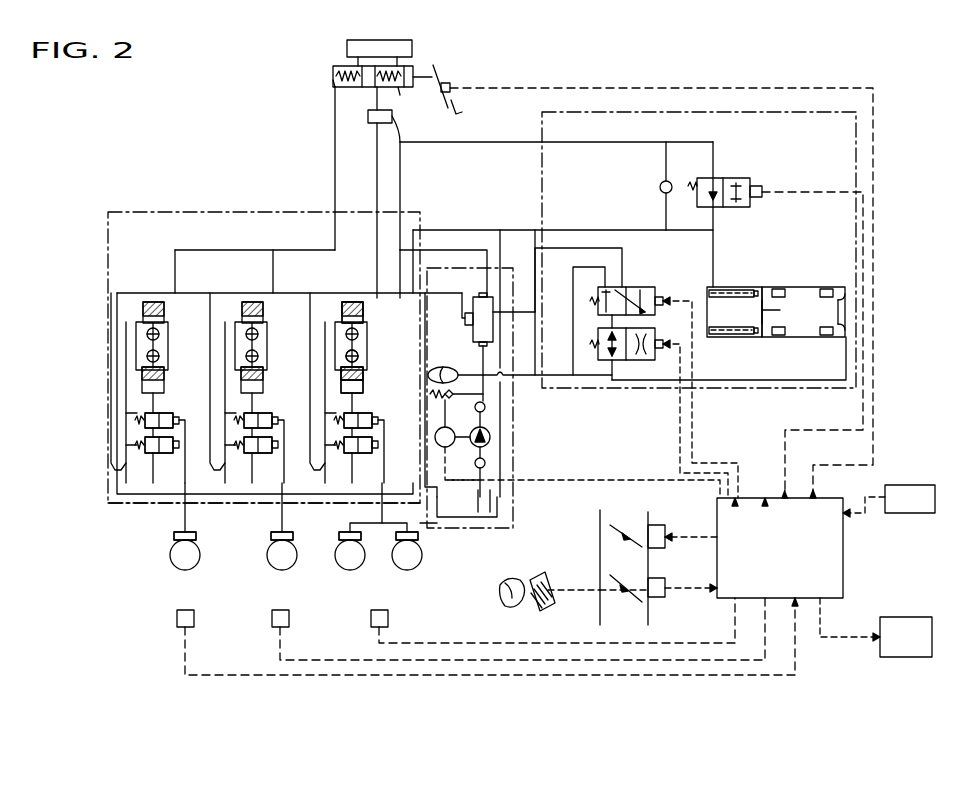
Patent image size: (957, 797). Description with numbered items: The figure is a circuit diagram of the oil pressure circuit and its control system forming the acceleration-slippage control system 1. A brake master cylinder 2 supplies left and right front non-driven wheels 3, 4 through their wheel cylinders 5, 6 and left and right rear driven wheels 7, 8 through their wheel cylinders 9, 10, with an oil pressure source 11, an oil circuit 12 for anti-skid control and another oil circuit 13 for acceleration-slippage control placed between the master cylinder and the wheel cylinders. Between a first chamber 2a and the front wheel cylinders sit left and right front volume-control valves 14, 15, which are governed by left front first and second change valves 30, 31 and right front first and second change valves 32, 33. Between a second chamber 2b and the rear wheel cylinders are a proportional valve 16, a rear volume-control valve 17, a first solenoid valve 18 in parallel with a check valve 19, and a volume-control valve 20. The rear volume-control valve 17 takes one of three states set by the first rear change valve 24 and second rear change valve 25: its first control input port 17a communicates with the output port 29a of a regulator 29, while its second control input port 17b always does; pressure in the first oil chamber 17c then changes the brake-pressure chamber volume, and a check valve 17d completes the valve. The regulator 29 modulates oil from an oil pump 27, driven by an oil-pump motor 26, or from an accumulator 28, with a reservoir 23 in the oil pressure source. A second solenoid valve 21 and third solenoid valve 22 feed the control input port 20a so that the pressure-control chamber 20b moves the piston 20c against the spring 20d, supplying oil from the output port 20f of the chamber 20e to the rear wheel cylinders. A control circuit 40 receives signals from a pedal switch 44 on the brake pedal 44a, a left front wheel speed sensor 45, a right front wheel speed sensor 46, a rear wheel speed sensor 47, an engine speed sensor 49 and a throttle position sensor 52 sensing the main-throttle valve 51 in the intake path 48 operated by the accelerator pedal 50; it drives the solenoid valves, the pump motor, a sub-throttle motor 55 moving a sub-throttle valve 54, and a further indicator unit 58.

The acceleration-slippage control system 1 is at (216, 170).
The brake master cylinder 2 is at (412, 72).
The first chamber 2a is at (333, 80).
The second chamber 2b is at (398, 90).
The left front non-driven wheel 3 is at (170, 563).
The right front non-driven wheel 4 is at (267, 563).
The left front wheel cylinder 5 is at (174, 534).
The right front wheel cylinder 6 is at (271, 534).
The left rear driven wheel 7 is at (335, 563).
The right rear driven wheel 8 is at (392, 563).
The left rear wheel cylinder 9 is at (339, 534).
The right rear wheel cylinder 10 is at (418, 535).
The oil pressure source 11 is at (505, 528).
The oil circuit for anti-skid control 12 is at (272, 212).
The oil circuit for acceleration-slippage control 13 is at (542, 112).
The left front volume-control valve 14 is at (145, 312).
The right front volume-control valve 15 is at (243, 312).
The proportional valve 16 is at (400, 145).
The rear volume-control valve 17 is at (343, 308).
The first control input port 17a is at (363, 393).
The second control input port 17b is at (352, 302).
The first oil chamber 17c is at (363, 380).
The check valve 17d is at (358, 357).
The first solenoid valve 18 is at (737, 178).
The check valve 19 is at (660, 185).
The volume-control valve for acceleration-slippage control 20 is at (774, 287).
The control input port 20a is at (838, 340).
The pressure-control chamber 20b is at (845, 335).
The piston 20c is at (808, 295).
The spring 20d is at (750, 334).
The chamber 20e is at (735, 334).
The output port 20f is at (712, 290).
The second solenoid valve 21 is at (645, 287).
The third solenoid valve 22 is at (648, 328).
The reservoir 23 is at (497, 512).
The first rear change valve 24 is at (372, 420).
The second rear change valve 25 is at (365, 453).
The oil-pump motor 26 is at (456, 435).
The oil pump 27 is at (490, 437).
The accumulator 28 is at (455, 383).
The regulator 29 is at (493, 300).
The output port 29a is at (466, 325).
The left front first change valve 30 is at (158, 416).
The left front second change valve 31 is at (158, 455).
The right front first change valve 32 is at (256, 416).
The right front second change valve 33 is at (256, 455).
The control circuit 40 is at (843, 545).
The pedal switch 44 is at (447, 83).
The brake pedal 44a is at (458, 103).
The left front wheel speed sensor 45 is at (177, 632).
The right front wheel speed sensor 46 is at (275, 632).
The rear wheel speed sensor 47 is at (374, 632).
The intake path 48 is at (598, 608).
The engine speed sensor 49 is at (910, 485).
The accelerator pedal 50 is at (548, 582).
The main-throttle valve 51 is at (635, 600).
The throttle position sensor 52 is at (658, 578).
The sub-throttle valve 54 is at (612, 528).
The sub-throttle motor 55 is at (660, 525).
The indicator 58 is at (908, 617).